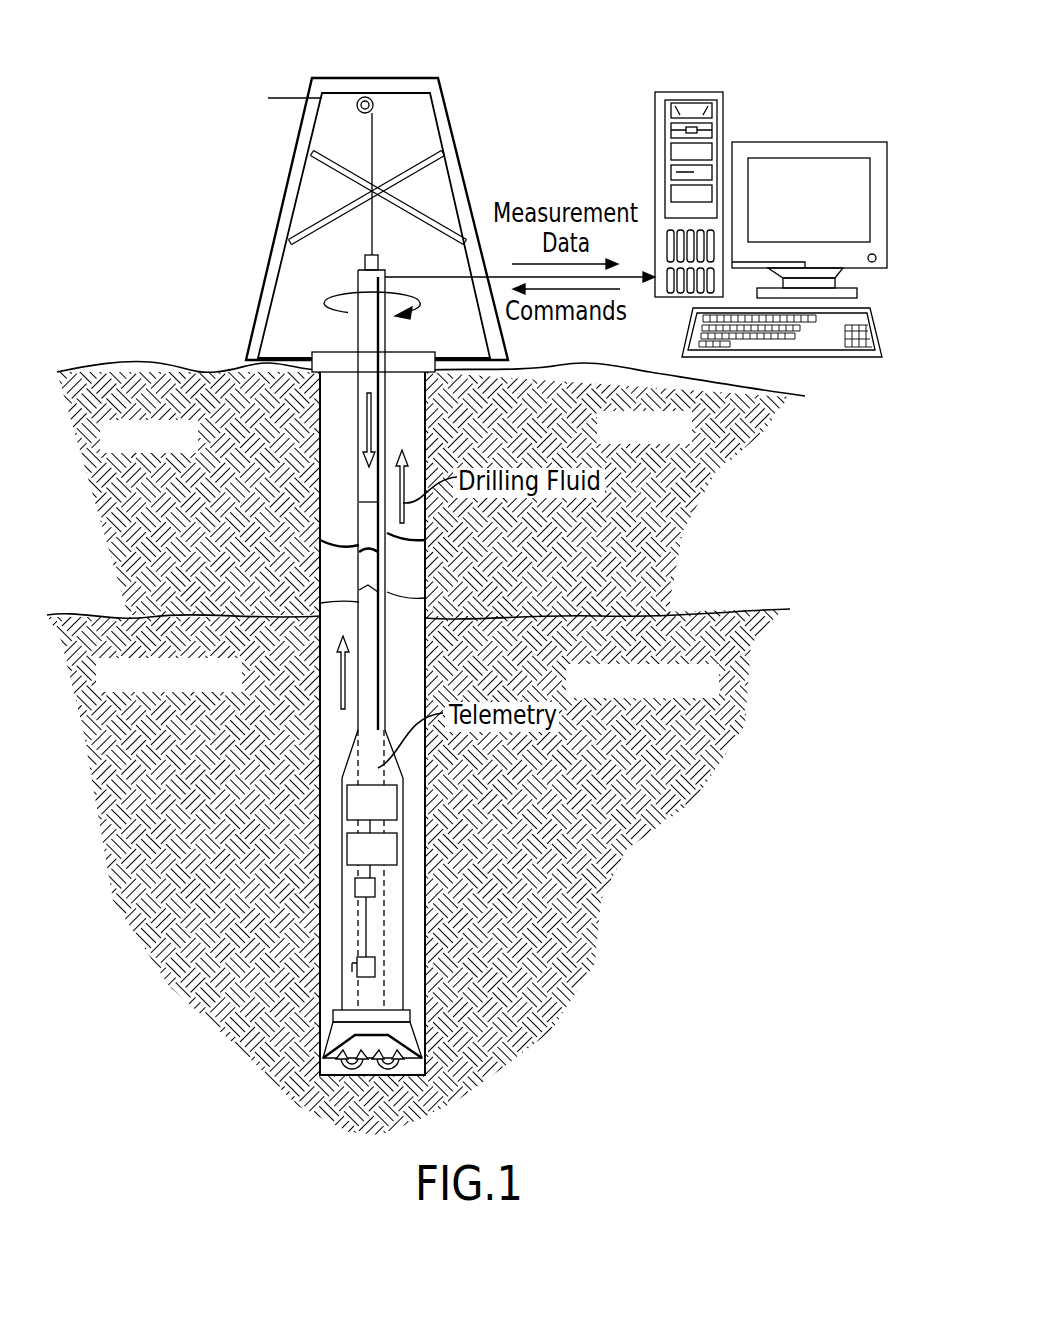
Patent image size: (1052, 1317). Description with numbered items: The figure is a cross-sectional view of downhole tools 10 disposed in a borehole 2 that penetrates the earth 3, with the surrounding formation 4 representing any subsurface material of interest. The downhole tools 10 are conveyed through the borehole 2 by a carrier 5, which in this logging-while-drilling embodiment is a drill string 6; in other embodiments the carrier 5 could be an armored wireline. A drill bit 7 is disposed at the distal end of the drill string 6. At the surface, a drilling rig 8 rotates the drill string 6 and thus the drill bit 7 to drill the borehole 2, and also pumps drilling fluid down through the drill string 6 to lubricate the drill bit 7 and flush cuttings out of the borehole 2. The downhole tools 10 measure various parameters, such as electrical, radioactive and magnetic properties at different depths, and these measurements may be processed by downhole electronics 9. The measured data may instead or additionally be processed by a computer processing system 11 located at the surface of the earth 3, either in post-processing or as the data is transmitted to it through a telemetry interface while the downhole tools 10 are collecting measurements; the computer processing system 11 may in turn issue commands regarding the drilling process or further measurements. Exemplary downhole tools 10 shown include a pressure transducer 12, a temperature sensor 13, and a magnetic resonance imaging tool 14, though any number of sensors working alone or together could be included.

The borehole 2 is at (328, 512).
The earth 3 is at (688, 440).
The formation 4 is at (714, 693).
The carrier 5 is at (358, 602).
The drill string 6 is at (360, 477).
The drill bit 7 is at (338, 1028).
The drilling rig 8 is at (192, 240).
The downhole electronics 9 is at (363, 816).
The downhole tools 10 is at (342, 820).
The computer processing system 11 is at (693, 92).
The pressure transducer 12 is at (359, 863).
The temperature sensor 13 is at (377, 887).
The magnetic resonance imaging tool 14 is at (377, 968).